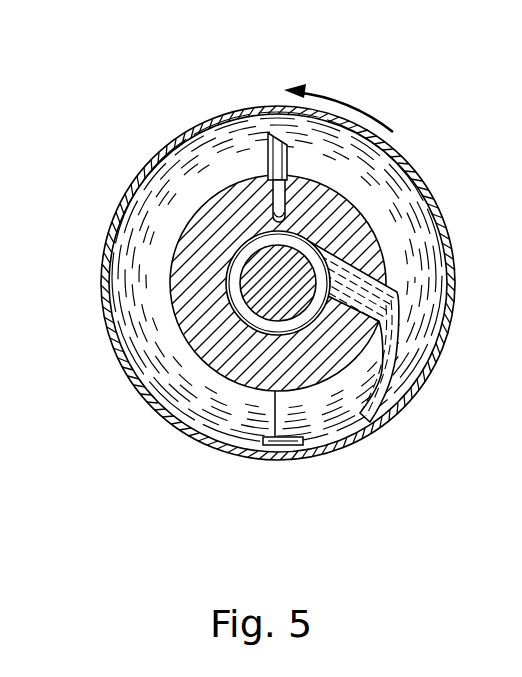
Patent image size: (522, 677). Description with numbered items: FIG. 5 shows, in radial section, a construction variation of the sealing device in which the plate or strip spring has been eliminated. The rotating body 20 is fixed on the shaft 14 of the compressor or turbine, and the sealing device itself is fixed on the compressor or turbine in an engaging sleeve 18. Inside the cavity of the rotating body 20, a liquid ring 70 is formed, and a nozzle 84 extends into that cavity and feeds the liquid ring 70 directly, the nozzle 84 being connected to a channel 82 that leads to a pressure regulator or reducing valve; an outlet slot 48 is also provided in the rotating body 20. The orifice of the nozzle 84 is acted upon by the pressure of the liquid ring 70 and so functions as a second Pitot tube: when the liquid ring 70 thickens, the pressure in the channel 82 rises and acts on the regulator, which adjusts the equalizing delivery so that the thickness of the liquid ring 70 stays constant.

The shaft 14 is at (268, 282).
The engaging sleeve 18 is at (210, 337).
The rotating body 20 is at (128, 198).
The outlet slot 48 is at (376, 418).
The liquid ring 70 is at (413, 212).
The channel 82 is at (273, 226).
The nozzle 84 is at (268, 158).